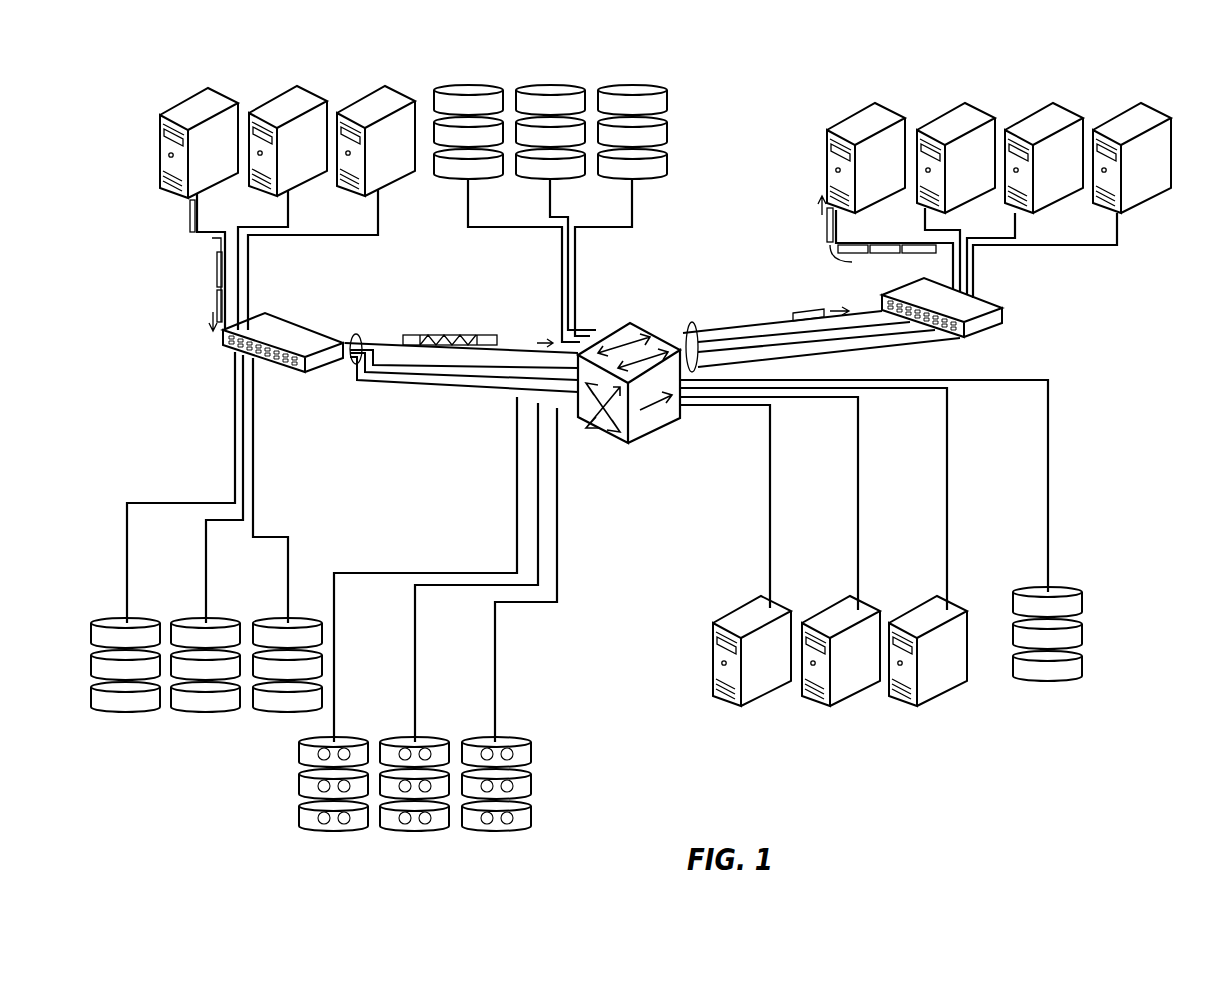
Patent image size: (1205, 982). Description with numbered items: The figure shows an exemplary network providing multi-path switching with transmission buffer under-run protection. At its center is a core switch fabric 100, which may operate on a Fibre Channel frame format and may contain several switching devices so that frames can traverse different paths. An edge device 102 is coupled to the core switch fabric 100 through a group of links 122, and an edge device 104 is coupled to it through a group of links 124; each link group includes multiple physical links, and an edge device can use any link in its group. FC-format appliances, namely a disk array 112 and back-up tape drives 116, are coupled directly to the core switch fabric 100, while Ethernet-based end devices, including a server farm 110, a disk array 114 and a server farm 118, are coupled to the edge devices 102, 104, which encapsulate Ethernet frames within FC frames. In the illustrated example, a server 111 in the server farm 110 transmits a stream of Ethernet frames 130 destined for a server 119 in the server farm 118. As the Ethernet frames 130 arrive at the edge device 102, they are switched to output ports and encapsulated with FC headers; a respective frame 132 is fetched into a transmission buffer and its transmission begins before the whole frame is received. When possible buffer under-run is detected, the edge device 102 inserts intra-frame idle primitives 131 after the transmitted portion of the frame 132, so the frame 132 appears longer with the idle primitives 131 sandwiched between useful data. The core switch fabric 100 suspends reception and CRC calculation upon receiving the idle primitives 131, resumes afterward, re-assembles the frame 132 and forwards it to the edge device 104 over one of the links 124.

The core switch fabric 100 is at (618, 441).
The edge device 102 is at (303, 326).
The edge device 104 is at (993, 302).
The server farm 110 is at (412, 83).
The server 111 is at (158, 140).
The disk array 112 is at (428, 83).
The disk array 114 is at (86, 710).
The back-up tape drives 116 is at (293, 830).
The server farm 118 is at (1172, 103).
The server 119 is at (826, 176).
The links 122 is at (356, 334).
The links 124 is at (692, 322).
The Ethernet frames 130 is at (196, 235).
The intra-frame idle primitives 131 is at (463, 335).
The frame 132 is at (403, 333).